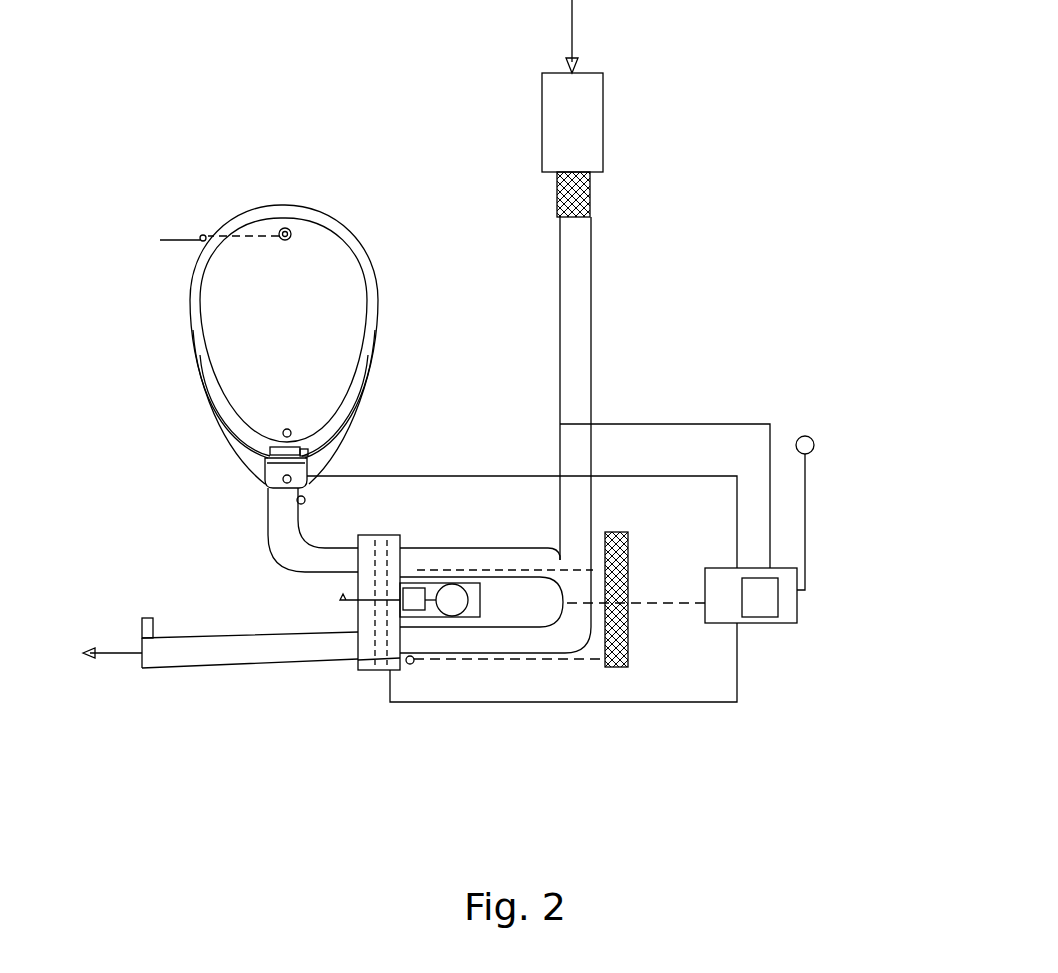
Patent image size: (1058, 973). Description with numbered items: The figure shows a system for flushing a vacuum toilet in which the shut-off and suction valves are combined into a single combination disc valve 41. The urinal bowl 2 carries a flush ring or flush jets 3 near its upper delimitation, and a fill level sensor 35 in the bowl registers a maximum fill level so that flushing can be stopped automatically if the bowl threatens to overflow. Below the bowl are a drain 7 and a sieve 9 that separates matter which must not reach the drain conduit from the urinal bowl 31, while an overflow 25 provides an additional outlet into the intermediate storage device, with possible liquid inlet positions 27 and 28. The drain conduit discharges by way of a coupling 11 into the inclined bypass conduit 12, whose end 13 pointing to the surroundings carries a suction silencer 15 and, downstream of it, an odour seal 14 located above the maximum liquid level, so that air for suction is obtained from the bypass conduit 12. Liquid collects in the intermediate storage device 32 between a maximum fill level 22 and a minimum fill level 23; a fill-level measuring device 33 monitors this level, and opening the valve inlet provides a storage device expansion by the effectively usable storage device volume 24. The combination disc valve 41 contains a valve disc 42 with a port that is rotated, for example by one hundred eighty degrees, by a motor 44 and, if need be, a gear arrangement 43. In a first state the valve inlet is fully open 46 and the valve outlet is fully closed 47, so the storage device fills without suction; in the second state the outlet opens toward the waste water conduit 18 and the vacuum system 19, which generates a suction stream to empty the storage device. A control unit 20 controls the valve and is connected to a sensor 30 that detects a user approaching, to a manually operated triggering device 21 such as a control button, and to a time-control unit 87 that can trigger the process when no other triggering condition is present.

The urinal bowl 2 is at (378, 265).
The flush ring or flush jet 3 is at (287, 229).
The fill level sensor 35 is at (287, 429).
The overflow 25 is at (222, 420).
The sieve 9 is at (230, 448).
The drain 7 is at (262, 470).
The sensor 30 is at (265, 488).
The drain conduit from the urinal bowl 31 is at (268, 520).
The liquid inlet position 27 is at (305, 500).
The combination disc valve 41 is at (383, 535).
The fully open valve inlet 46 is at (375, 562).
The valve disc 42 is at (378, 612).
The fully closed valve outlet 47 is at (360, 650).
The waste water conduit 18 is at (232, 632).
The vacuum system 19 is at (148, 618).
The maximum fill level 22 is at (430, 560).
The coupling 11 is at (556, 548).
The intermediate storage device 32 is at (560, 585).
The effectively usable storage device volume 24 is at (560, 604).
The gear arrangement 43 is at (417, 612).
The motor 44 is at (452, 617).
The liquid inlet position 28 is at (410, 664).
The minimum fill level 23 is at (525, 660).
The fill-level measuring device 33 is at (628, 640).
The bypass conduit 12 is at (592, 315).
The odour seal 14 is at (590, 200).
The suction silencer 15 is at (603, 125).
The end of the bypass conduit 13 is at (590, 73).
The control unit 20 is at (797, 600).
The time-control unit 87 is at (763, 605).
The triggering device 21 is at (805, 436).